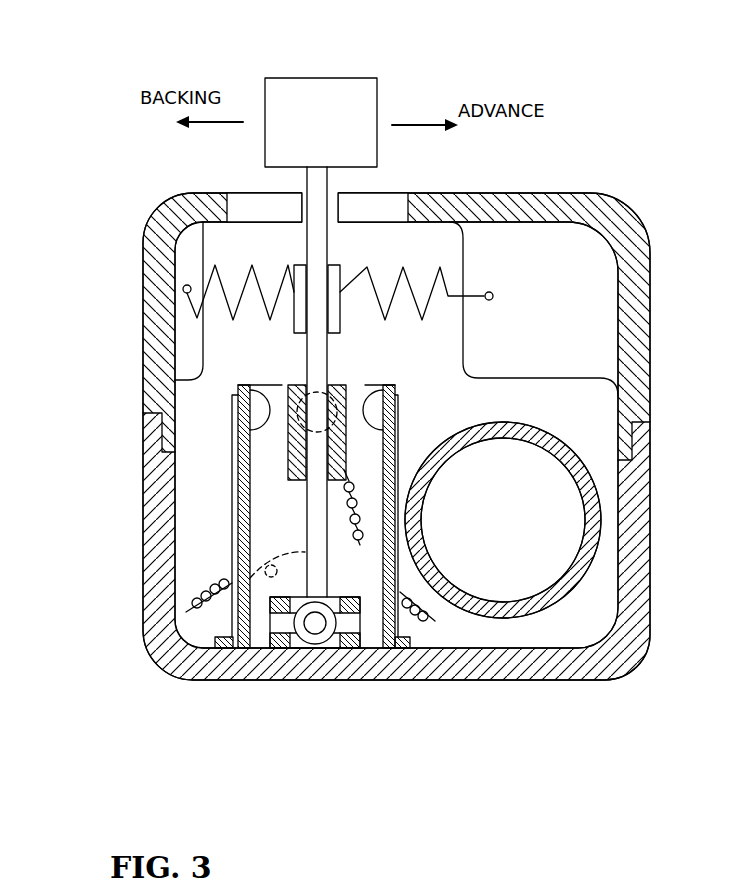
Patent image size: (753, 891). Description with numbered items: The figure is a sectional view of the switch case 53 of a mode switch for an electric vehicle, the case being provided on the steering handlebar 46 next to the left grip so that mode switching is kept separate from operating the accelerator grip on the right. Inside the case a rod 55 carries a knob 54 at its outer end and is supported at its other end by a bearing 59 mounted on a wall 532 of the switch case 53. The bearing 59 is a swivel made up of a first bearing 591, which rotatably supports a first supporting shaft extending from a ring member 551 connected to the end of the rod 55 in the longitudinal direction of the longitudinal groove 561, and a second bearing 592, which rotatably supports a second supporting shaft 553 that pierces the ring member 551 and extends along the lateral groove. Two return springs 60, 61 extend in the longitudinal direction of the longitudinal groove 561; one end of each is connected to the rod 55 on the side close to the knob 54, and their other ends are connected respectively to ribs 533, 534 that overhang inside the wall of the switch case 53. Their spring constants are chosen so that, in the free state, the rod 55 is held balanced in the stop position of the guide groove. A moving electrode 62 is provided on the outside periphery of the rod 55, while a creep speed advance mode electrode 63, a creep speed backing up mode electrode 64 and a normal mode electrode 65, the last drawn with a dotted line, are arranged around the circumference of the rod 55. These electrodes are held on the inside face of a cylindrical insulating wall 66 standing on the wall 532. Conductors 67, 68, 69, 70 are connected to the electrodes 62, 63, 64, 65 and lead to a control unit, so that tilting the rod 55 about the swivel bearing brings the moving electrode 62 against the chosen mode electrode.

The steering handlebar 46 is at (542, 607).
The switch case 53 is at (190, 683).
The wall 532 is at (490, 682).
The rib 533 is at (522, 252).
The rib 534 is at (190, 257).
The knob 54 is at (370, 100).
The rod 55 is at (320, 352).
The ring member 551 is at (300, 648).
The second supporting shaft 553 is at (314, 626).
The longitudinal groove 561 is at (248, 212).
The bearing 59 is at (304, 686).
The first bearing 591 is at (350, 650).
The second bearing 592 is at (172, 655).
The return spring 60 is at (392, 253).
The return spring 61 is at (137, 208).
The moving electrode 62 is at (247, 452).
The creep speed advance mode electrode 63 is at (368, 390).
The creep speed backing up mode electrode 64 is at (287, 390).
The normal mode electrode 65 is at (323, 393).
The insulating wall 66 is at (250, 520).
The conductor 67 is at (367, 543).
The conductor 68 is at (437, 620).
The conductor 69 is at (202, 582).
The conductor 70 is at (262, 625).